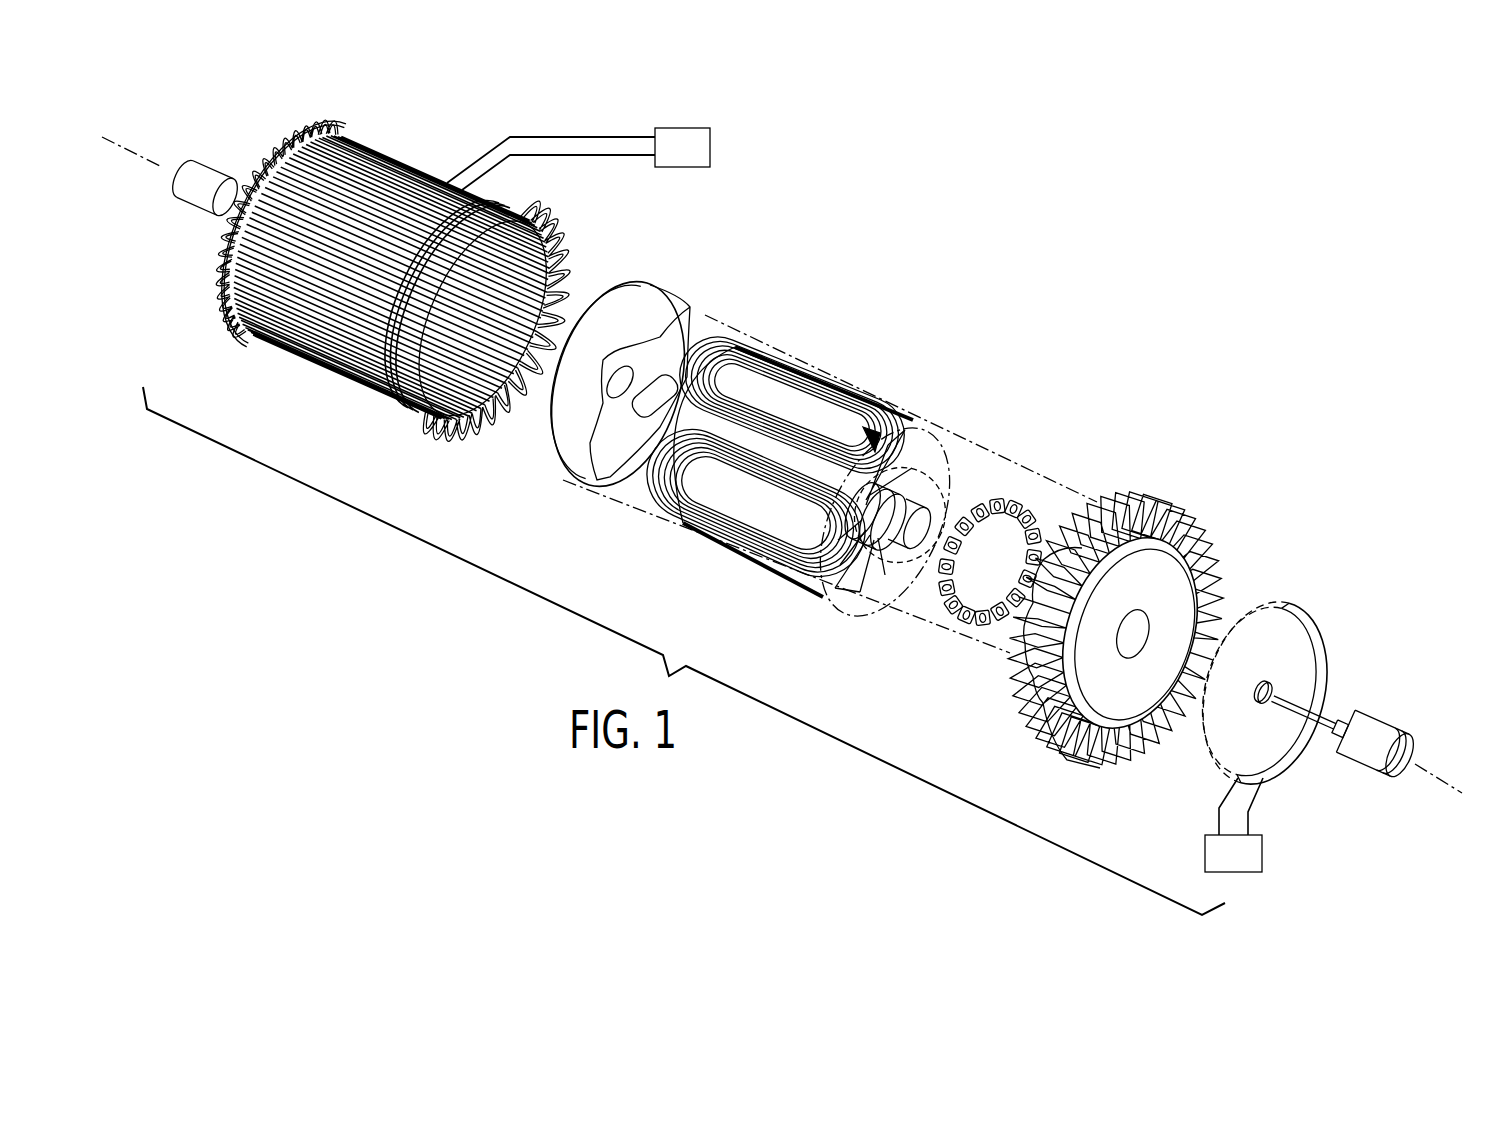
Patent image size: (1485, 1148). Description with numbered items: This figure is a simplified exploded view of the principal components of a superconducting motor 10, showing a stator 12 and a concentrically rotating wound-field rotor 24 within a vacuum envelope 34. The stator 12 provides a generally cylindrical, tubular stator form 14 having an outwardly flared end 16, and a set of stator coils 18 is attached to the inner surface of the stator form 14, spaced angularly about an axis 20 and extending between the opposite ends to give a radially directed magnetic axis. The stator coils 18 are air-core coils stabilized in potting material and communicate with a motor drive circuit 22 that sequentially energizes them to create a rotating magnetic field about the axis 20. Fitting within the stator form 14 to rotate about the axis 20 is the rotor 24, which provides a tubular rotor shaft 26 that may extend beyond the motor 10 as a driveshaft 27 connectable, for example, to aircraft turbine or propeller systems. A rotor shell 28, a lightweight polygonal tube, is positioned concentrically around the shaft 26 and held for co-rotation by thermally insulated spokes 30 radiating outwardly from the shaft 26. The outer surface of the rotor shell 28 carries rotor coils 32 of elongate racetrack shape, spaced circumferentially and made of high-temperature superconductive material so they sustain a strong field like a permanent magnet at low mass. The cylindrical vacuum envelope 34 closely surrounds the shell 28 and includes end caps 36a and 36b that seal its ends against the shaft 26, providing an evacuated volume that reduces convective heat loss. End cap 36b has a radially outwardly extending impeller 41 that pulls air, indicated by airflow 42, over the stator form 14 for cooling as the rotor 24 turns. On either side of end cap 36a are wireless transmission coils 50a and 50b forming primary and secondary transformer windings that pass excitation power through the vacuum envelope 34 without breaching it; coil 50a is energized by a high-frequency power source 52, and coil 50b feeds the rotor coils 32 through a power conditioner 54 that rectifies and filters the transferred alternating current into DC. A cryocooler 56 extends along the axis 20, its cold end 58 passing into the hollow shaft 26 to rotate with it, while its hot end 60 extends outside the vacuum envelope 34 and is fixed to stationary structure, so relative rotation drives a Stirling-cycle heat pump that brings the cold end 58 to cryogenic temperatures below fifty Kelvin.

The superconducting motor 10 is at (978, 292).
The stator 12 is at (358, 412).
The stator form 14 is at (393, 278).
The outwardly flared end 16 is at (268, 223).
The stator coils 18 is at (466, 311).
The axis 20 is at (130, 152).
The motor drive circuit 22 is at (578, 159).
The rotor 24 is at (613, 508).
The rotor shaft 26 is at (653, 393).
The driveshaft 27 is at (205, 177).
The rotor shell 28 is at (760, 553).
The thermally insulated spokes 30 is at (883, 453).
The rotor coils 32 is at (753, 392).
The vacuum envelope 34 is at (560, 481).
The end cap 36a is at (1100, 687).
The end cap 36b is at (603, 430).
The impeller 41 is at (1124, 602).
The airflow 42 is at (1232, 510).
The wireless transmission coil 50a is at (1318, 616).
The wireless transmission coil 50b is at (942, 608).
The high-frequency power source 52 is at (1234, 825).
The power conditioner 54 is at (850, 583).
The cryocooler 56 is at (1331, 706).
The cold end 58 is at (1281, 674).
The hot end 60 is at (1417, 751).